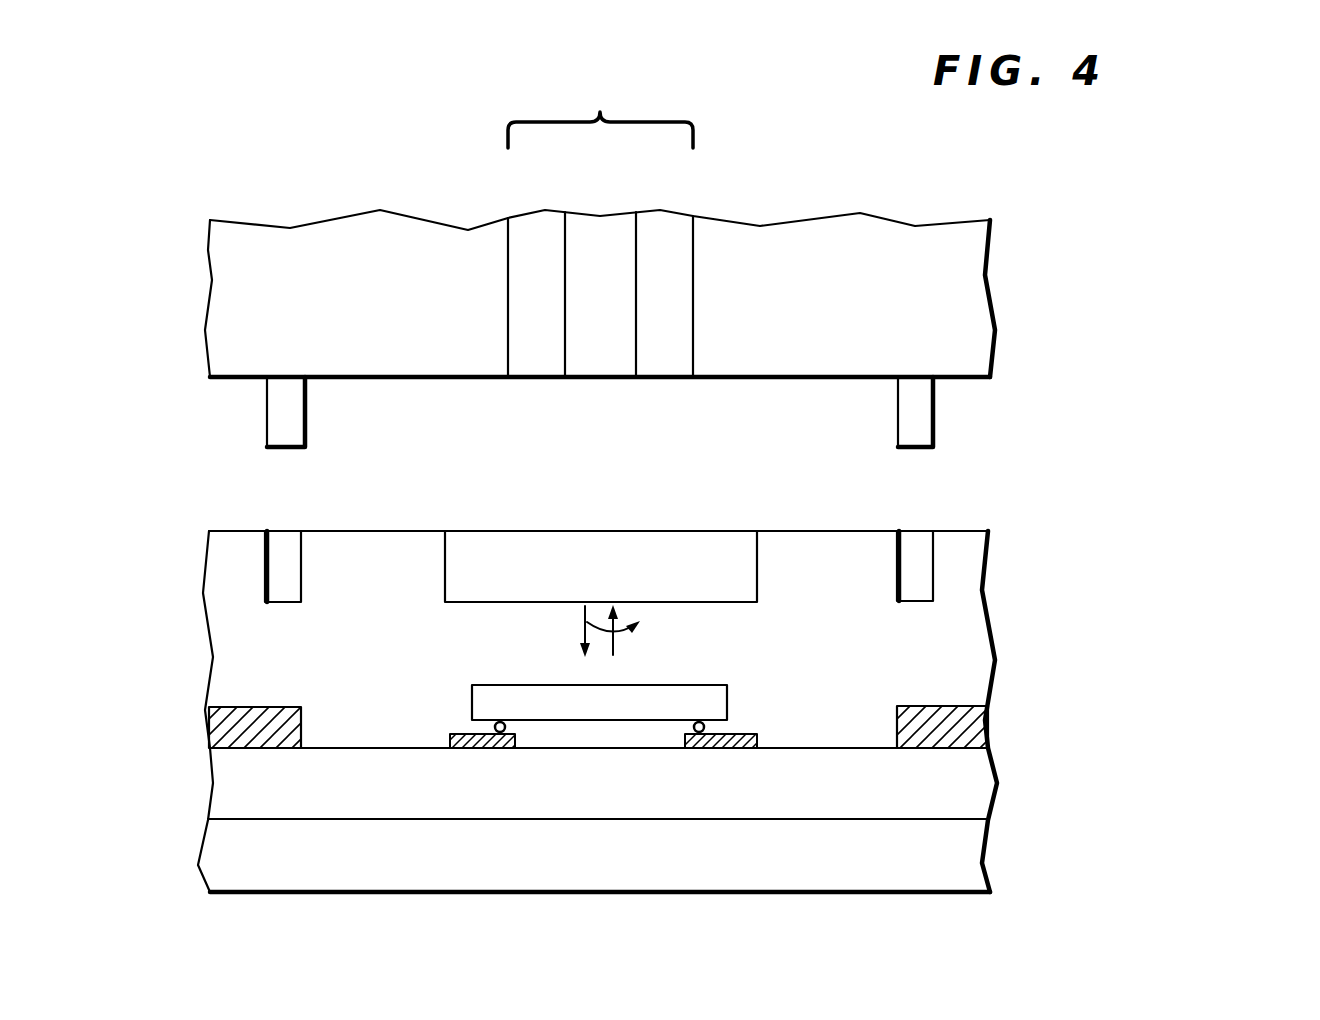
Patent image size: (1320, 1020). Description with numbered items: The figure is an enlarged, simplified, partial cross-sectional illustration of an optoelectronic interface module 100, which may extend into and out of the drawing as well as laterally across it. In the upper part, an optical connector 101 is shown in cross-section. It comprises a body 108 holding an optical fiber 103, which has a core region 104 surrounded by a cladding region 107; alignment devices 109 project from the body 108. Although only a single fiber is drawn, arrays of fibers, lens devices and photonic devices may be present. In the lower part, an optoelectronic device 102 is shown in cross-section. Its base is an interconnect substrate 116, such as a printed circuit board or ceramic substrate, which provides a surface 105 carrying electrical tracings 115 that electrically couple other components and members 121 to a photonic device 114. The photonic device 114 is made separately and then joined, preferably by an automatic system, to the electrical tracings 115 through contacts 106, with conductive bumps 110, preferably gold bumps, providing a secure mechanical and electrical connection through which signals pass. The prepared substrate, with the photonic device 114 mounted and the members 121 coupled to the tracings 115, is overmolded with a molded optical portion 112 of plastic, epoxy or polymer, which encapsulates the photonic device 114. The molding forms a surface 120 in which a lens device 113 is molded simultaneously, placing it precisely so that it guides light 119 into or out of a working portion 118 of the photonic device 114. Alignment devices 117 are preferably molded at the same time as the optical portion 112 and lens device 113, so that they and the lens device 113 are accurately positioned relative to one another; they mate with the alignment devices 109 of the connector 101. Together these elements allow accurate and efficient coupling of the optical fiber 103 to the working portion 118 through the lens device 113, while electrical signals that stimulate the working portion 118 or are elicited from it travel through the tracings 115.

The optoelectronic interface module 100 is at (1179, 221).
The optical connector 101 is at (1102, 146).
The optoelectronic device 102 is at (681, 682).
The optical fiber 103 is at (600, 109).
The core region 104 is at (610, 217).
The surface 105 is at (334, 747).
The contacts 106 is at (502, 722).
The cladding region 107 is at (542, 213).
The body 108 is at (225, 350).
The alignment devices 109 is at (273, 407).
The conductive bumps 110 is at (494, 727).
The molded optical portion 112 is at (977, 622).
The lens device 113 is at (598, 580).
The photonic device 114 is at (728, 688).
The electrical tracings 115 is at (443, 733).
The interconnect substrate 116 is at (980, 792).
The alignment devices 117 is at (298, 562).
The working portion 118 is at (585, 672).
The light 119 is at (640, 627).
The surface 120 is at (378, 531).
The members 121 is at (212, 718).